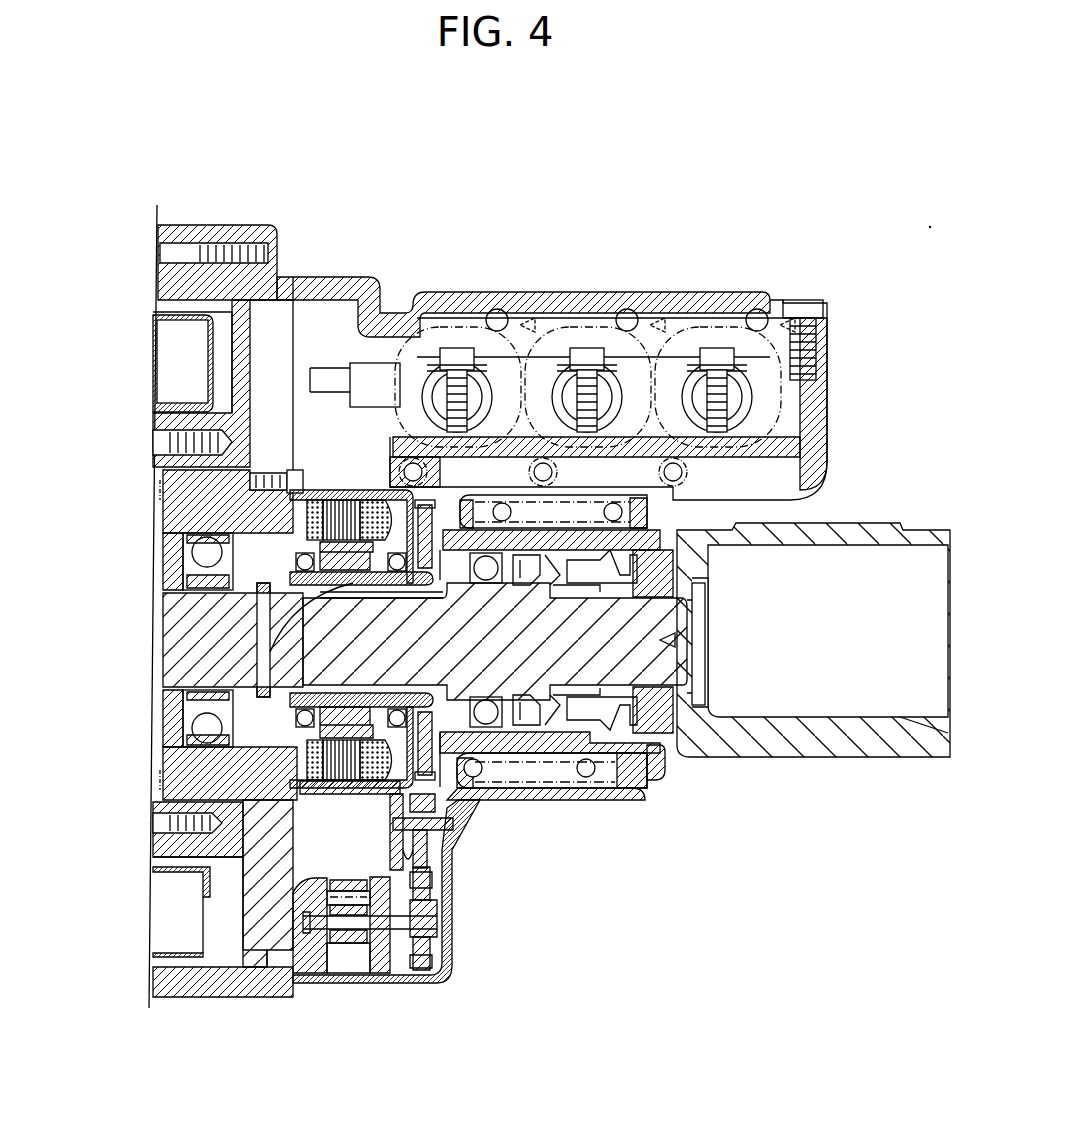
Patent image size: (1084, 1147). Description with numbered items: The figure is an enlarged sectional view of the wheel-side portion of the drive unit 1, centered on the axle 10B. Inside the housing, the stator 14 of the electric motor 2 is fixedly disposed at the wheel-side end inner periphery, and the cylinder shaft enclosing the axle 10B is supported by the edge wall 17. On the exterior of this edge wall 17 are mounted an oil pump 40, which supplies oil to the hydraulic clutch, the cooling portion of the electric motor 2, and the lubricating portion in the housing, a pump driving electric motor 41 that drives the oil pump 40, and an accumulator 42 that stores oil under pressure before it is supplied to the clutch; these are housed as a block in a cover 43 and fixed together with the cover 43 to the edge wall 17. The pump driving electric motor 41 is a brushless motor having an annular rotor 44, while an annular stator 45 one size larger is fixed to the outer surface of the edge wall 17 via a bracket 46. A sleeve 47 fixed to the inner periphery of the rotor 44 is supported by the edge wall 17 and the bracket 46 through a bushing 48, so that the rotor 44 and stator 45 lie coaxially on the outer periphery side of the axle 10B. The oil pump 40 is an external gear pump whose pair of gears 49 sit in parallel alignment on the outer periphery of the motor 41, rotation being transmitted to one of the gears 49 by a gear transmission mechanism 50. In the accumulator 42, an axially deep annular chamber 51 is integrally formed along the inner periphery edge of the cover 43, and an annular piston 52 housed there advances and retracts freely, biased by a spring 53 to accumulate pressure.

The electric motor 1 is at (846, 505).
The electric motor 2 is at (190, 302).
The axle 10B is at (625, 665).
The stator 14 is at (168, 338).
The edge wall 17 is at (262, 277).
The oil pump 40 is at (355, 966).
The pump driving electric motor 41 is at (317, 806).
The accumulator 42 is at (546, 803).
The cover 43 is at (450, 967).
The rotor 44 is at (340, 592).
The stator 45 is at (305, 518).
The bracket 46 is at (228, 442).
The sleeve 47 is at (280, 643).
The bushing 48 is at (393, 718).
The gears 49 is at (347, 947).
The gear transmission mechanism 50 is at (433, 887).
The annular chamber 51 is at (522, 780).
The piston 52 is at (655, 780).
The spring 53 is at (585, 780).